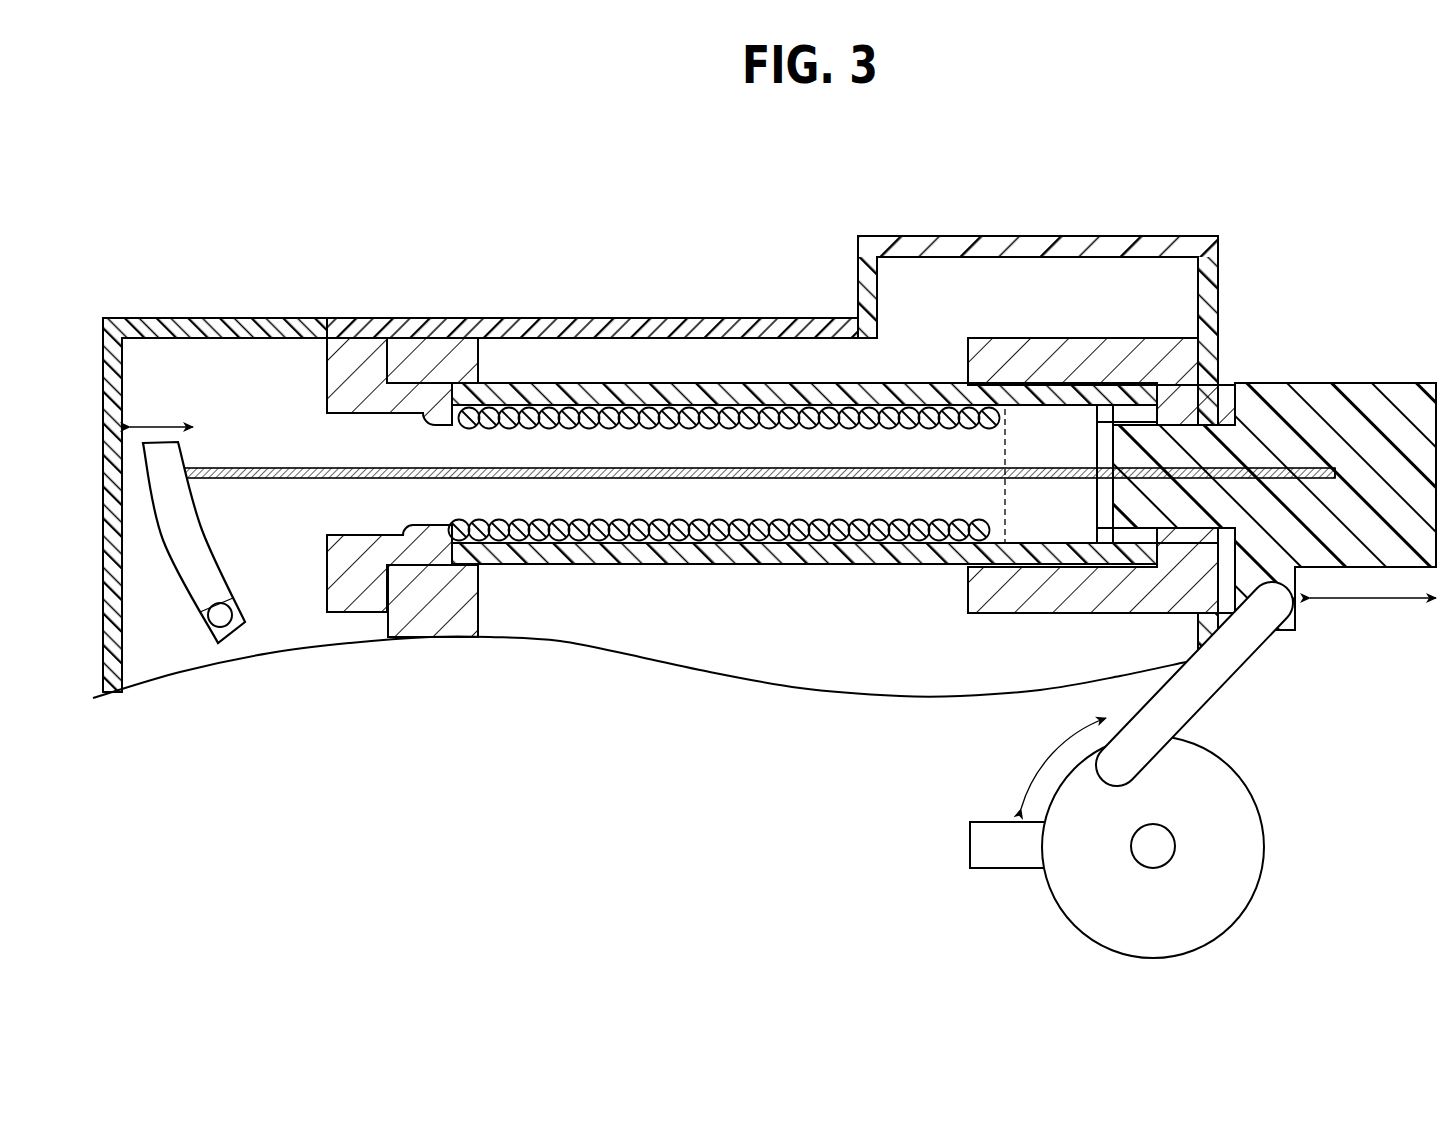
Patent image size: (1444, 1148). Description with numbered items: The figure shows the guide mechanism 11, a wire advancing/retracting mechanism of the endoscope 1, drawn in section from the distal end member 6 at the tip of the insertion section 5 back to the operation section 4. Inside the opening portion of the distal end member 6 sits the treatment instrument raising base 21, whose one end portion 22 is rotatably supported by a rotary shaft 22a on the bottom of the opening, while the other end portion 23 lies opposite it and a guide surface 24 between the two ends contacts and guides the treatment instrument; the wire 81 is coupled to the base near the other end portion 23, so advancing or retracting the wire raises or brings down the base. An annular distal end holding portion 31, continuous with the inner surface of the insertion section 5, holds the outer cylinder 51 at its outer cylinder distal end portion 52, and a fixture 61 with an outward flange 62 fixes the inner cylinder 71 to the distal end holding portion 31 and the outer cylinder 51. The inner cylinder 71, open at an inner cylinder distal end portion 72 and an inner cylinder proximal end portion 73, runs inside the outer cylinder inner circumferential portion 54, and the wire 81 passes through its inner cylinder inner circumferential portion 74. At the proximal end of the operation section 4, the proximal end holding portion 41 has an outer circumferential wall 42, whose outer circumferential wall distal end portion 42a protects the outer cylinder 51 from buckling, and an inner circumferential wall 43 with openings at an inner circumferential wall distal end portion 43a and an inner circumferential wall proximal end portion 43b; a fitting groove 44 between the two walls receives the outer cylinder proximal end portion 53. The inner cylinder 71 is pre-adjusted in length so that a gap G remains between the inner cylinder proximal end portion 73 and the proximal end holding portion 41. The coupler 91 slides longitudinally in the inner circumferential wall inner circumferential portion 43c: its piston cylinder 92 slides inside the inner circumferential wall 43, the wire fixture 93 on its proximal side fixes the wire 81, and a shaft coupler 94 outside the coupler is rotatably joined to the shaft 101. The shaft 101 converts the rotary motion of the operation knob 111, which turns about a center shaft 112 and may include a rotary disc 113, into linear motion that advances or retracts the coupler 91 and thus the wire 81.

The endoscope 1 is at (1038, 411).
The operation section 4 is at (1045, 236).
The insertion section 5 is at (672, 318).
The distal end member 6 is at (272, 318).
The guide mechanism 11 is at (282, 624).
The treatment instrument raising base 21 is at (203, 544).
The one end portion 22 is at (230, 612).
The rotary shaft 22a is at (207, 620).
The other end portion 23 is at (188, 468).
The guide surface 24 is at (200, 525).
The distal end holding portion 31 is at (422, 614).
The proximal end holding portion 41 is at (968, 600).
The outer circumferential wall 42 is at (1012, 337).
The outer circumferential wall distal end portion 42a is at (968, 352).
The inner circumferential wall 43 is at (1100, 412).
The inner circumferential wall distal end portion 43a is at (1100, 427).
The inner circumferential wall proximal end portion 43b is at (1222, 410).
The inner circumferential wall inner circumferential portion 43c is at (1105, 470).
The fitting groove 44 is at (1100, 541).
The outer cylinder 51 is at (672, 568).
The outer cylinder distal end portion 52 is at (450, 552).
The outer cylinder proximal end portion 53 is at (1165, 555).
The outer cylinder inner circumferential portion 54 is at (778, 568).
The fixture 61 is at (327, 396).
The outward flange 62 is at (327, 350).
The inner cylinder 71 is at (730, 442).
The inner cylinder distal end portion 72 is at (466, 430).
The inner cylinder proximal end portion 73 is at (1000, 432).
The inner cylinder inner circumferential portion 74 is at (760, 428).
The wire 81 is at (410, 480).
The coupler 91 is at (1398, 383).
The piston cylinder 92 is at (1250, 445).
The wire fixture 93 is at (1308, 468).
The shaft coupler 94 is at (1296, 615).
The shaft 101 is at (1215, 700).
The operation knob 111 is at (970, 845).
The center shaft 112 is at (1152, 848).
The rotary disc 113 is at (1250, 875).
The gap G is at (1003, 493).